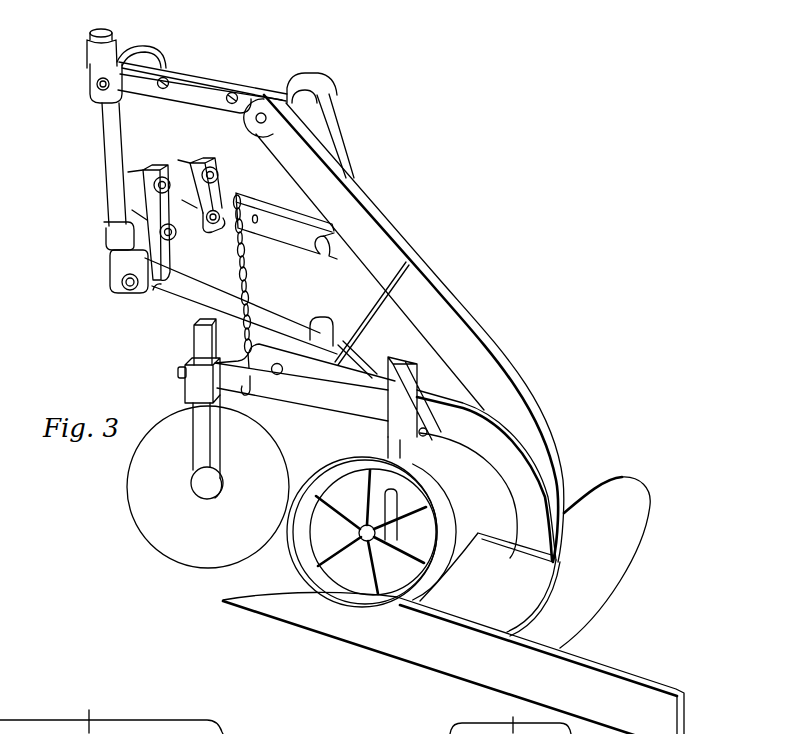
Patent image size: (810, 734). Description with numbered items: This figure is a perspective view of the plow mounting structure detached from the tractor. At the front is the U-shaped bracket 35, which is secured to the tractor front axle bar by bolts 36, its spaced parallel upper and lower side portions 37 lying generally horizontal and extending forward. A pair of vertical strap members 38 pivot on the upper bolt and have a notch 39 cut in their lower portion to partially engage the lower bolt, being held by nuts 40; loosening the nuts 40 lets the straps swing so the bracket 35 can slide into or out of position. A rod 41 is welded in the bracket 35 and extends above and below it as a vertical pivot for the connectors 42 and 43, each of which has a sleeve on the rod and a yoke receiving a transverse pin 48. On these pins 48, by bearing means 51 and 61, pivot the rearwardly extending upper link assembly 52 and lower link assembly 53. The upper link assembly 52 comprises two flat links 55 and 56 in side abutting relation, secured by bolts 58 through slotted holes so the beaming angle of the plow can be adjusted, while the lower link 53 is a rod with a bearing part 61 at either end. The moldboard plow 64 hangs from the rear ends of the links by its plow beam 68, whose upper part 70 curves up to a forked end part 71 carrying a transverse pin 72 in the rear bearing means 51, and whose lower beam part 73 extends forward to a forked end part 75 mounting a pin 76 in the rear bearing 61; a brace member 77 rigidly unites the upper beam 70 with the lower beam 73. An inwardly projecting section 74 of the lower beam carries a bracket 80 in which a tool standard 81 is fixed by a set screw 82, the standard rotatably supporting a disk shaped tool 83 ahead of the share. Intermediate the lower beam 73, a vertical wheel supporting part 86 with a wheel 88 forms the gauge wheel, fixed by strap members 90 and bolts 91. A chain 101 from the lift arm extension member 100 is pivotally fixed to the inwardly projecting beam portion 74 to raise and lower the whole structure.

The U-shaped bracket 35 is at (137, 138).
The bolts 36 is at (147, 167).
The upper and lower side portions 37 is at (94, 113).
The vertical strap members 38 is at (174, 168).
The notch 39 is at (206, 232).
The nuts 40 is at (219, 175).
The rod 41 is at (107, 172).
The connector 42 is at (90, 57).
The connector 43 is at (109, 258).
The pin 48 is at (96, 87).
The bearing means 51 is at (147, 50).
The upper link assembly 52 is at (203, 95).
The lower link assembly 53 is at (213, 292).
The flat link 55 is at (210, 103).
The flat link 56 is at (227, 75).
The bolts 58 is at (232, 105).
The bearing part 61 is at (325, 325).
The moldboard plow 64 is at (478, 596).
The plow beam 68 is at (560, 543).
The upper beam part 70 is at (441, 295).
The forked end part 71 is at (337, 125).
The transverse pin 72 is at (256, 122).
The lower beam part 73 is at (348, 405).
The inwardly projecting section 74 is at (249, 397).
The forked end part 75 is at (350, 345).
The pin 76 is at (281, 379).
The brace member 77 is at (382, 287).
The bracket 80 is at (185, 398).
The tool standard 81 is at (194, 330).
The set screw 82 is at (178, 372).
The disk shaped tool 83 is at (127, 485).
The vertical wheel supporting part 86 is at (387, 435).
The wheel 88 is at (342, 461).
The strap members 90 is at (425, 438).
The bolts 91 is at (383, 371).
The lift arm extension member 100 is at (292, 211).
The chain 101 is at (248, 268).